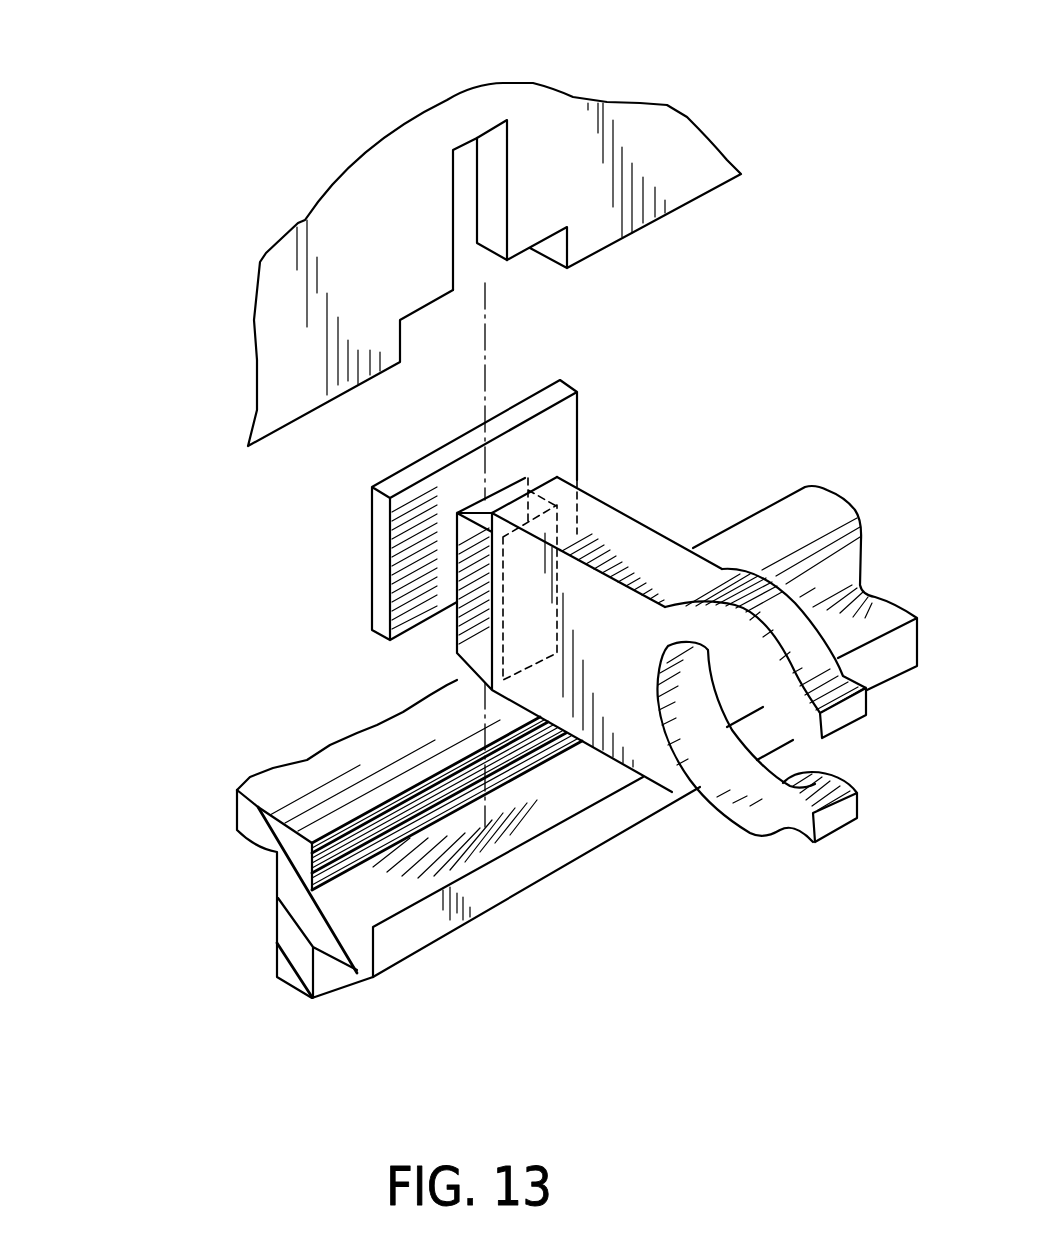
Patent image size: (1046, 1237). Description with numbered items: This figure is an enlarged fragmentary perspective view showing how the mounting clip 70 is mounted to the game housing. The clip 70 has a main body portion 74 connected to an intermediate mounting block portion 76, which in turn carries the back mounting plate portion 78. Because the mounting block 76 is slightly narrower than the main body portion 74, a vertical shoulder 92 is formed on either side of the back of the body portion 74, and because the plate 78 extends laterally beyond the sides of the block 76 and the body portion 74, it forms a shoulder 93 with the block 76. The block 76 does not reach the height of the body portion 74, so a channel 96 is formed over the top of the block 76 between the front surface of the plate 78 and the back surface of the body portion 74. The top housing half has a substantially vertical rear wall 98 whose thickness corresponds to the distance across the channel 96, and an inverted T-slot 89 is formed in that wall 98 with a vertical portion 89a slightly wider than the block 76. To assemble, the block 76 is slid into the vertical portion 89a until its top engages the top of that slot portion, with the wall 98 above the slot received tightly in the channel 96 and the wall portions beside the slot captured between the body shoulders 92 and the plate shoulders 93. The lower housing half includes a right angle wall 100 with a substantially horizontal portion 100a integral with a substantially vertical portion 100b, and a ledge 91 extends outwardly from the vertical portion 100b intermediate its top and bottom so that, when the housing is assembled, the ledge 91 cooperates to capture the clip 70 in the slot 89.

The vertical rear wall 98 is at (677, 127).
The inverted T-slot 89 is at (505, 285).
The vertical portion of the slot 89a is at (463, 152).
The mounting plate portion 78 is at (444, 598).
The shoulder 93 is at (445, 533).
The mounting block portion 76 is at (460, 578).
The vertical shoulder 92 is at (488, 620).
The channel 96 is at (507, 483).
The main body portion 74 is at (600, 523).
The mounting clip 70 is at (668, 503).
The ledge 91 is at (555, 848).
The right angle wall 100 is at (258, 882).
The horizontal portion 100a is at (243, 828).
The vertical portion 100b is at (290, 982).